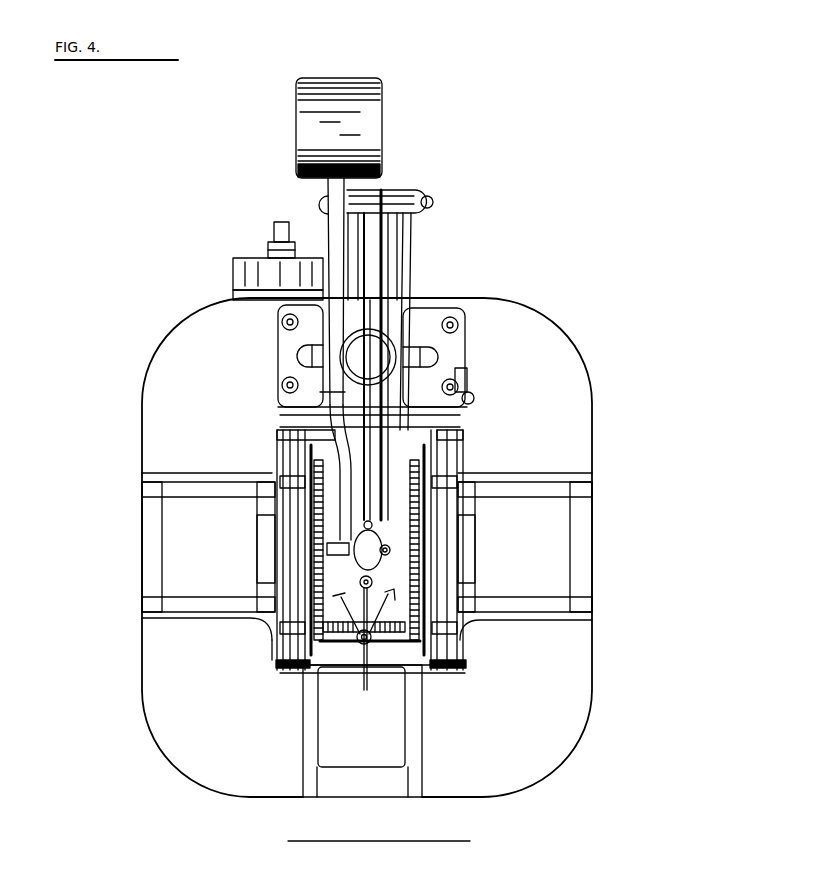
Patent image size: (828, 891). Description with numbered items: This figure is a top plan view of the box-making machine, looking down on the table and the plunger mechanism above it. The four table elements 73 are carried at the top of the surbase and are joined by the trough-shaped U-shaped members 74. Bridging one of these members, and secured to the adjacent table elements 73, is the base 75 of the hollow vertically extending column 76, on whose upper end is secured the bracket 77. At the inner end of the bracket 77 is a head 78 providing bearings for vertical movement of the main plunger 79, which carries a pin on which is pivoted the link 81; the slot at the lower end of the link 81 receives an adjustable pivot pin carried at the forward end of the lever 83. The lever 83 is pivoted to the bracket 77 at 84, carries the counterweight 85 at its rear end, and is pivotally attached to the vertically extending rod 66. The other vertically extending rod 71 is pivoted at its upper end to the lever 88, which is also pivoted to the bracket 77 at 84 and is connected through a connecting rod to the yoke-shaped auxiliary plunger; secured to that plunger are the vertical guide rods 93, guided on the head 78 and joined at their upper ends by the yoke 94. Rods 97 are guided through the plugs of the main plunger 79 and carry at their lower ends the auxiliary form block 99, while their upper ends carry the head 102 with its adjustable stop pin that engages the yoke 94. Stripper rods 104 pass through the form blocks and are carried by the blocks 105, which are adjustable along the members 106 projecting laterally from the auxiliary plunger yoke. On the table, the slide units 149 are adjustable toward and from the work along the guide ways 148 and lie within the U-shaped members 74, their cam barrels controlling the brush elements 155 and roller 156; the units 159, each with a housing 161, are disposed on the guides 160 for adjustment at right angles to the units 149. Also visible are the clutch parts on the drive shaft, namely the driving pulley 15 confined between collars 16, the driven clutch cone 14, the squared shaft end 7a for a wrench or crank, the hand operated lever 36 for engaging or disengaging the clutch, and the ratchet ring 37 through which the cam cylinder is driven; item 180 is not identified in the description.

The table elements 73 is at (170, 338).
The counterweight 85 is at (382, 118).
The bracket 77 is at (387, 190).
The pivot 84 is at (466, 212).
The hollow vertically extending column 76 is at (383, 303).
The lever 88 is at (410, 320).
The base 75 is at (462, 316).
The vertically extending rod 71 is at (450, 352).
The vertically extending rod 66 is at (303, 357).
The hand operated lever 36 is at (480, 393).
The ratchet ring 37 is at (420, 414).
The lever 83 is at (330, 397).
The driving clutch member or pulley 15 is at (232, 274).
The driven clutch cone 14 is at (235, 292).
The collars 16 is at (268, 250).
The squared outer end 7a is at (274, 228).
The U-shaped members 74 is at (152, 558).
The housing 161 is at (165, 515).
The guides 160 is at (160, 490).
The units 159 is at (182, 565).
The link 81 is at (318, 540).
The stripper rods 104 is at (330, 497).
The guide ways or slides 148 is at (320, 412).
The brush elements 155 is at (330, 428).
The roller 156 is at (318, 470).
The vertical guide rods 93 is at (428, 531).
The rods 97 is at (385, 555).
The head 78 is at (400, 572).
The yoke 94 is at (445, 638).
The head 102 is at (435, 648).
The bracket 180 is at (462, 622).
The main plunger 79 is at (330, 618).
The auxiliary form block 99 is at (322, 668).
The blocks 105 is at (348, 653).
The slide units 149 is at (372, 750).
The members 106 is at (364, 653).